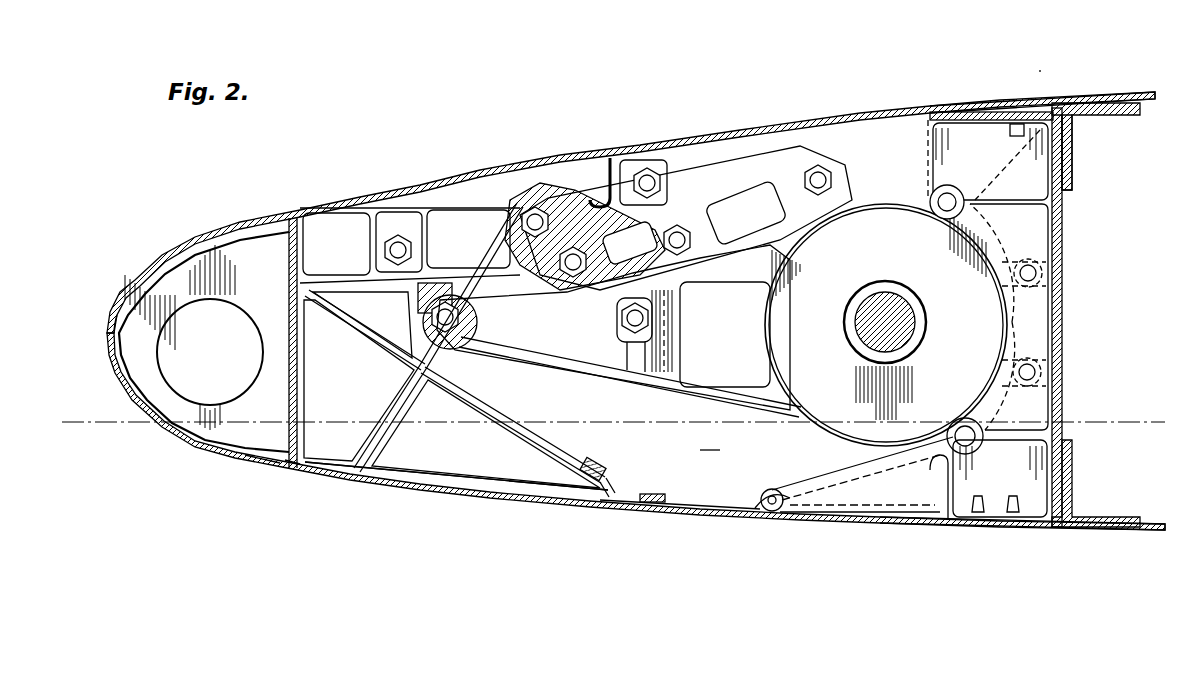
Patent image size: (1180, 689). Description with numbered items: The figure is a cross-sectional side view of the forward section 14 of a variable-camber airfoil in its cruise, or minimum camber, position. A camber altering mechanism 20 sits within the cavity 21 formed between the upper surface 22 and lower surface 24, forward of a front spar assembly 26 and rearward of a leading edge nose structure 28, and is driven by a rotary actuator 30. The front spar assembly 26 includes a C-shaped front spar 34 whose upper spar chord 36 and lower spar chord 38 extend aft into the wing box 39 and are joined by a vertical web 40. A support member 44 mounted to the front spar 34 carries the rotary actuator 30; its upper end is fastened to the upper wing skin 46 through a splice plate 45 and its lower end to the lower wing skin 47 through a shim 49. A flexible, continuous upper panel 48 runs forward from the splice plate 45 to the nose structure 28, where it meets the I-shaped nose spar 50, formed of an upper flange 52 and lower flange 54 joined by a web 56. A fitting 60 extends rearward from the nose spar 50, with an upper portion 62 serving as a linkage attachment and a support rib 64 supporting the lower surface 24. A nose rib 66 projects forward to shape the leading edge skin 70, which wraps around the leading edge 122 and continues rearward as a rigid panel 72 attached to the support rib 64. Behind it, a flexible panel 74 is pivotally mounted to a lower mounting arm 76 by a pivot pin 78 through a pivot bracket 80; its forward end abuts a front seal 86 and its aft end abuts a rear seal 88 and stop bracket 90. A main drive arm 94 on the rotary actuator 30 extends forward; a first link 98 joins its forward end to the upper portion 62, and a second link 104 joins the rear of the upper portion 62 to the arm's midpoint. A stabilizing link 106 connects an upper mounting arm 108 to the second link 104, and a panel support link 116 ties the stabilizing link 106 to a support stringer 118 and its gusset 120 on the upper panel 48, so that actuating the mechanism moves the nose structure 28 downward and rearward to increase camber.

The forward section 14 is at (1035, 65).
The camber altering mechanism 20 is at (703, 165).
The cavity 21 is at (712, 452).
The upper surface 22 is at (812, 112).
The lower surface 24 is at (622, 500).
The front spar assembly 26 is at (1028, 318).
The leading edge nose structure 28 is at (258, 272).
The rotary actuator 30 is at (955, 380).
The front spar 34 is at (1066, 257).
The upper spar chord 36 is at (1098, 118).
The lower spar chord 38 is at (1073, 477).
The wing box 39 is at (1095, 182).
The web 40 is at (1062, 290).
The support member 44 is at (1012, 232).
The splice plate 45 is at (975, 105).
The upper wing skin 46 is at (1130, 97).
The lower wing skin 47 is at (1086, 535).
The upper panel 48 is at (545, 153).
The shim 49 is at (1032, 527).
The nose spar 50 is at (287, 474).
The upper flange 52 is at (320, 212).
The lower flange 54 is at (267, 465).
The web 56 is at (300, 359).
The fitting 60 is at (433, 365).
The upper portion 62 is at (467, 200).
The support rib 64 is at (528, 435).
The nose rib 66 is at (148, 377).
The leading edge skin 70 is at (170, 267).
The rigid panel 72 is at (530, 505).
The flexible panel 74 is at (710, 510).
The lower mounting arm 76 is at (853, 487).
The pivot pin 78 is at (780, 510).
The pivot bracket 80 is at (768, 507).
The front seal 86 is at (660, 503).
The rear seal 88 is at (935, 520).
The stop bracket 90 is at (922, 520).
The main drive arm 94 is at (505, 350).
The first link 98 is at (367, 247).
The second link 104 is at (528, 195).
The stabilizing link 106 is at (753, 140).
The upper mounting arm 108 is at (890, 150).
The panel support link 116 is at (680, 200).
The support stringer 118 is at (607, 177).
The gusset 120 is at (628, 162).
The leading edge 122 is at (103, 350).